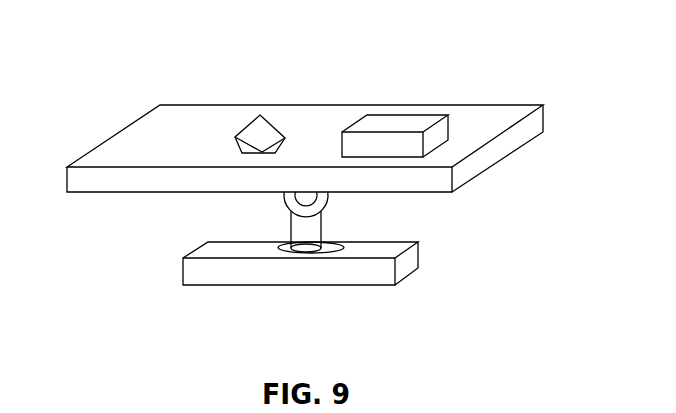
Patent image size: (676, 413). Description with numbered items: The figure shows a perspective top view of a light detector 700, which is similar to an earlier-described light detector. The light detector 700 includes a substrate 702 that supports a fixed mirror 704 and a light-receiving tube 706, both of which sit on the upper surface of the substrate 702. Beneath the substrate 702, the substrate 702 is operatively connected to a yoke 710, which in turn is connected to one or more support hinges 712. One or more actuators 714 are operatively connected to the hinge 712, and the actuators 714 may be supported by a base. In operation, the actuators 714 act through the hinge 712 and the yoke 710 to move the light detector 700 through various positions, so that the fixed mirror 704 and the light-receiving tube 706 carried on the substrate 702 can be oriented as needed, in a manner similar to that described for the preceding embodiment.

The light detector 700 is at (178, 80).
The substrate 702 is at (120, 182).
The fixed mirror 704 is at (258, 128).
The light-receiving tube 706 is at (398, 123).
The yoke 710 is at (330, 202).
The support hinge 712 is at (293, 236).
The actuator 714 is at (298, 253).